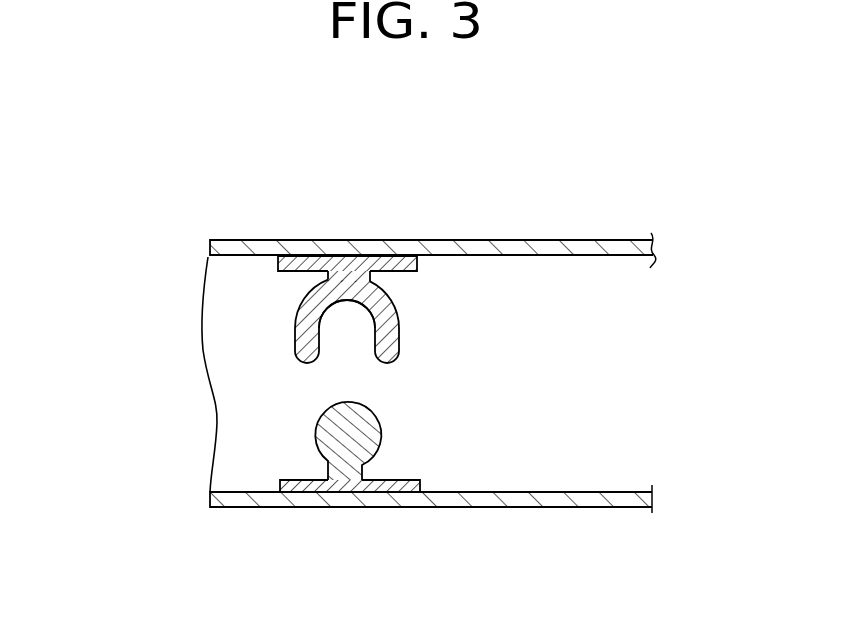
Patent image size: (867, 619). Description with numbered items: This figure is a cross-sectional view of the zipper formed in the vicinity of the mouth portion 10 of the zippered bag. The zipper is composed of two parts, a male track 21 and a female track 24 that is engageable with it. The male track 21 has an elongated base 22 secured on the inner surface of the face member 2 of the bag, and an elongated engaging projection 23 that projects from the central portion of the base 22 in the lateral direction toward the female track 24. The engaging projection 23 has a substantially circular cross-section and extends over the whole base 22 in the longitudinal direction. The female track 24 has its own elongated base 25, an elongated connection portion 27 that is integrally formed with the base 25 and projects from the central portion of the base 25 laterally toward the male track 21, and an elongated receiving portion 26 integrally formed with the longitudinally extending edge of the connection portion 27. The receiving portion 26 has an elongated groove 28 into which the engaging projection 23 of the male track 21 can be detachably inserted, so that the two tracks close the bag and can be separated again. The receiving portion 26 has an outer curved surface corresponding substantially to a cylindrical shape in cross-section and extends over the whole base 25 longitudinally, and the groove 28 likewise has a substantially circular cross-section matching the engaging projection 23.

The face member 2 is at (507, 240).
The mouth portion 10 is at (208, 249).
The male track 21 is at (393, 480).
The base 22 is at (310, 480).
The engaging projection 23 is at (381, 417).
The female track 24 is at (412, 294).
The base 25 is at (301, 277).
The receiving portion 26 is at (400, 343).
The connection portion 27 is at (371, 281).
The groove 28 is at (314, 325).